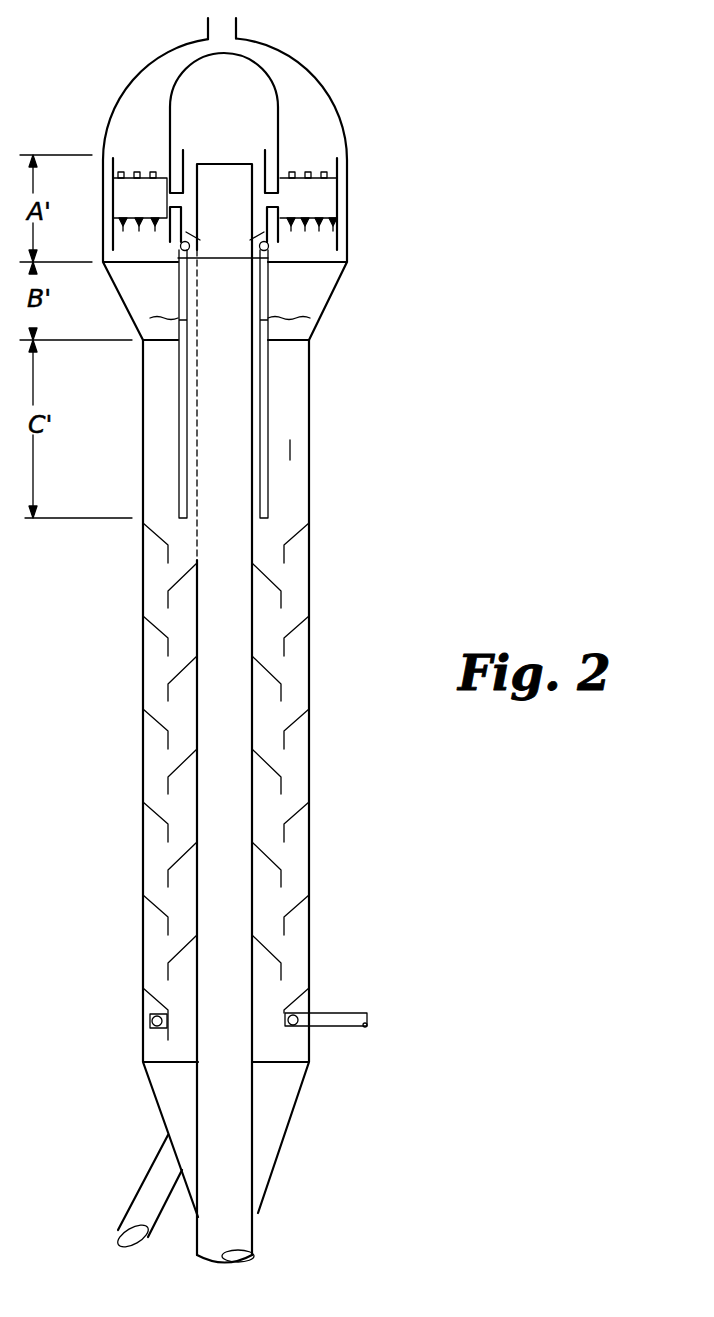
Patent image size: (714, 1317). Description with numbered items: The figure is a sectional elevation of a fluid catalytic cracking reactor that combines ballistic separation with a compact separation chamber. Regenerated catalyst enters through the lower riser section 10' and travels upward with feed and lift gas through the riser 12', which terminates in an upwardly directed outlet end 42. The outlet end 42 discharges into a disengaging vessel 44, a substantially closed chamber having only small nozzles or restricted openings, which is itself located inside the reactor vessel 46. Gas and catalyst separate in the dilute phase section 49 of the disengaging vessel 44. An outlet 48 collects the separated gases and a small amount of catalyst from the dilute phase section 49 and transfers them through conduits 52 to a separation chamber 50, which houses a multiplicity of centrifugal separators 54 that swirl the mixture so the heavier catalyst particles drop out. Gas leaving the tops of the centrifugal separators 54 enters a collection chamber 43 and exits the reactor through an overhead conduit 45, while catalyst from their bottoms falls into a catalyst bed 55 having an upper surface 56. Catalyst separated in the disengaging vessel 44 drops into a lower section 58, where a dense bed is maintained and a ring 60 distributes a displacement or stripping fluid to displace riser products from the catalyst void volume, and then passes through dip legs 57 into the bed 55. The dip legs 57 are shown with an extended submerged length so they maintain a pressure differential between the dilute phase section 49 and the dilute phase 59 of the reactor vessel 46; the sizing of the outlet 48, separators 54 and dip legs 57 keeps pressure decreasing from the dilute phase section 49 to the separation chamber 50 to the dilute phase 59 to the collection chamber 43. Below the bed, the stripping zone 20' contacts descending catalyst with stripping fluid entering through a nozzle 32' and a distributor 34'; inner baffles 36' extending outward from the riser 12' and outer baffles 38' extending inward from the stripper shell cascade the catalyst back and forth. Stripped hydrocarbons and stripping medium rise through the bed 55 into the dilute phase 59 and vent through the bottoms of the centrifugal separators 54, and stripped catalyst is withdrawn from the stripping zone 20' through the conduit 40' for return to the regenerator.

The collection chamber 43 is at (155, 73).
The overhead conduit 45 is at (240, 32).
The reactor vessel 46 is at (350, 197).
The dilute phase section 49 is at (233, 111).
The conduits 52 is at (175, 150).
The outlet 48 is at (272, 150).
The riser outlet end 42 is at (254, 163).
The separation chamber 50 is at (308, 193).
The centrifugal separators 54 is at (118, 173).
The disengaging vessel 44 is at (293, 247).
The ring 60 is at (189, 242).
The dilute phase 59 is at (163, 298).
The lower section 58 is at (272, 259).
The upper surface 56 is at (302, 318).
The dip legs 57 is at (178, 438).
The catalyst bed 55 is at (290, 449).
The stripping zone 20' is at (257, 778).
The riser 12' is at (284, 709).
The outer baffles 38' is at (257, 778).
The inner baffles 36' is at (267, 771).
The nozzle 32' is at (327, 997).
The distributor 34' is at (120, 1030).
The conduit 40' is at (141, 1193).
The lower riser section 10' is at (259, 1246).